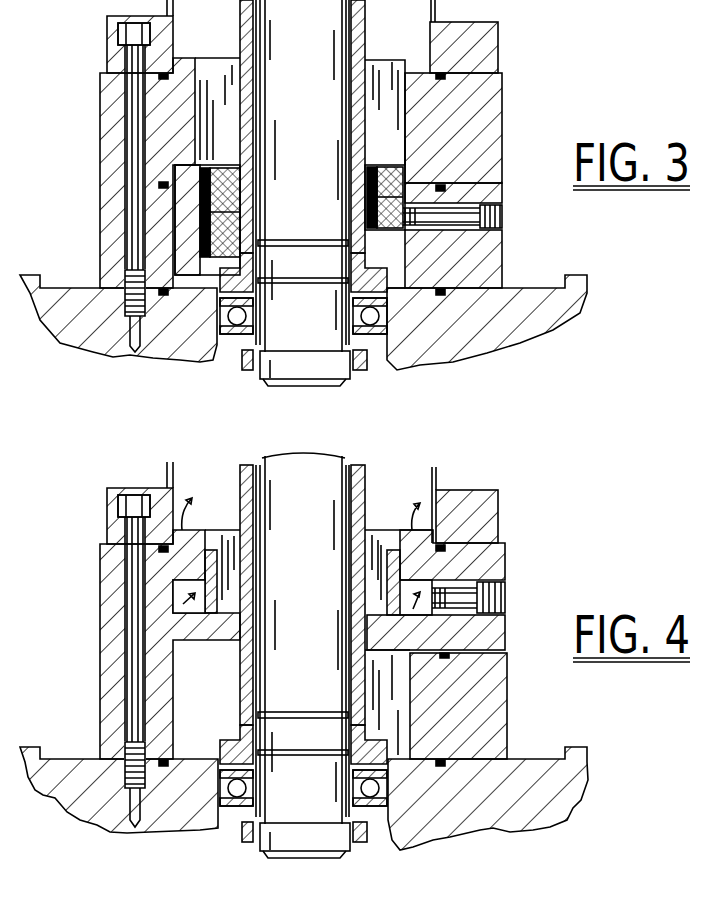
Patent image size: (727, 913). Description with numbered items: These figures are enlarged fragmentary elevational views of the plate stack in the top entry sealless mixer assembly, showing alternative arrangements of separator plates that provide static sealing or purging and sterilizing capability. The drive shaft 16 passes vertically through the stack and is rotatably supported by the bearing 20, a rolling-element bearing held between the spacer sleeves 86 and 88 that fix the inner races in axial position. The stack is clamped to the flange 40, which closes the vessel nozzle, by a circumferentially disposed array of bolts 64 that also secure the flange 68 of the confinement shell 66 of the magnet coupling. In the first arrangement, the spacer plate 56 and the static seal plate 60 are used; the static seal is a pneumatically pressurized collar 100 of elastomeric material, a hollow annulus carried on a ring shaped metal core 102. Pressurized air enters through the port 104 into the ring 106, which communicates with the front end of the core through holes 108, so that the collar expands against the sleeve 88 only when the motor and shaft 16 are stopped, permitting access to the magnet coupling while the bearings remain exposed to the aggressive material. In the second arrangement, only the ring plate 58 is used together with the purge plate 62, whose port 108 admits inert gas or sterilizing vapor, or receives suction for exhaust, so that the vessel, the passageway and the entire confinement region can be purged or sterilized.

In FIG. 3, the drive shaft 16 is at (312, 142).
In FIG. 4, the drive shaft 16 is at (312, 606).
In FIG. 3, the upper bearing 20 is at (233, 345).
In FIG. 4, the upper bearing 20 is at (233, 818).
In FIG. 3, the flange 40 is at (583, 315).
In FIG. 4, the flange 40 is at (583, 798).
In FIG. 3, the spacer plate 56 is at (503, 113).
In FIG. 4, the spacer plate 58 is at (506, 708).
In FIG. 3, the static seal plate 60 is at (503, 196).
In FIG. 4, the purge plate 62 is at (506, 556).
In FIG. 3, the bolts 64 is at (135, 88).
In FIG. 4, the bolts 64 is at (135, 600).
In FIG. 4, the confinement shell 66 is at (438, 474).
In FIG. 3, the flange 68 is at (499, 46).
In FIG. 4, the flange 68 is at (499, 510).
In FIG. 3, the spacer sleeve 86 is at (246, 372).
In FIG. 4, the spacer sleeve 86 is at (371, 842).
In FIG. 3, the spacer sleeve 88 is at (368, 32).
In FIG. 4, the spacer sleeve 88 is at (366, 508).
In FIG. 3, the pneumatically pressurized collar 100 is at (393, 162).
In FIG. 3, the ring shaped metal core 102 is at (400, 265).
In FIG. 3, the port 104 is at (482, 229).
In FIG. 3, the ring 106 is at (453, 259).
In FIG. 3, the holes 108 is at (206, 232).
In FIG. 4, the holes 108 is at (479, 584).